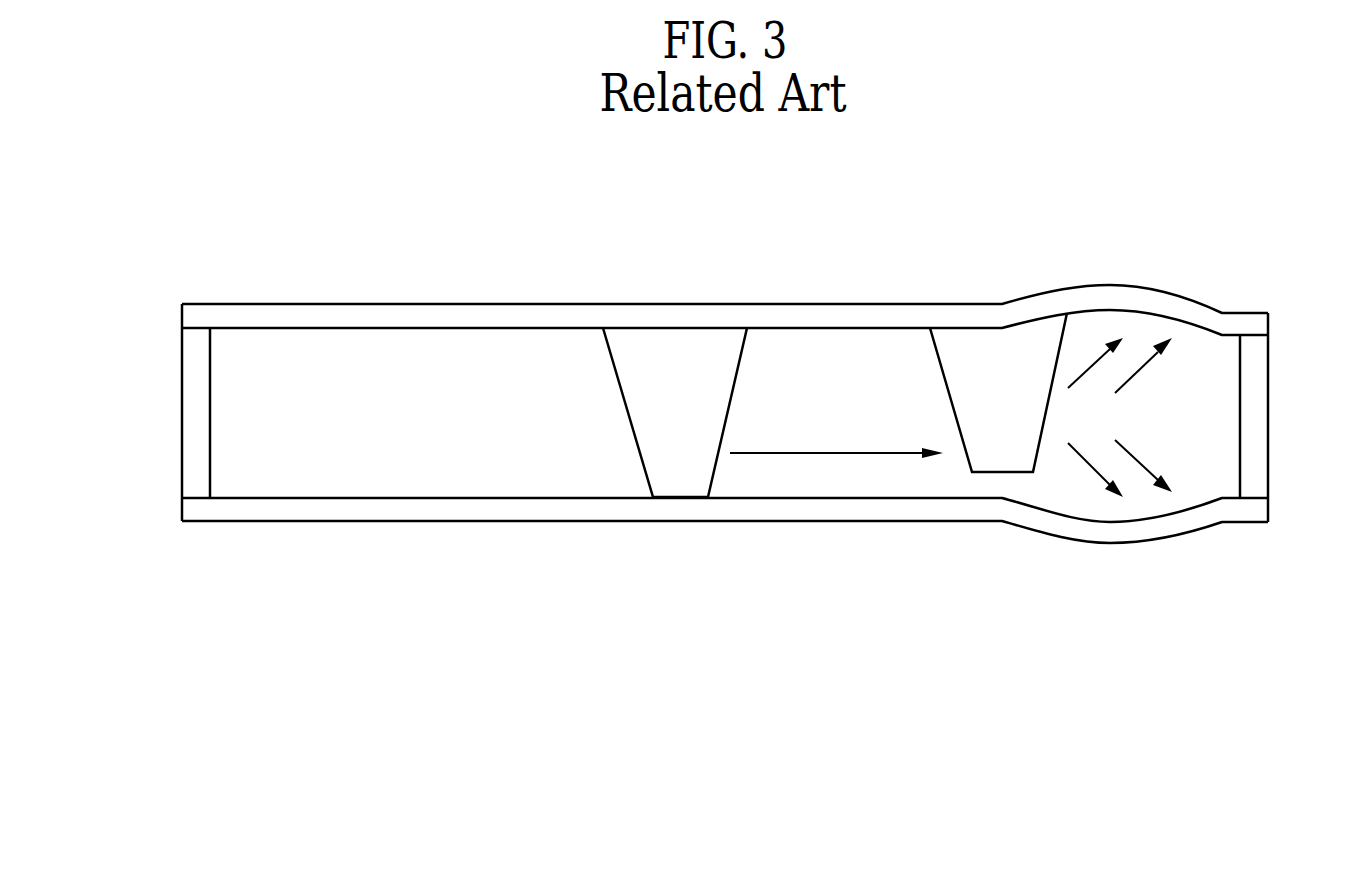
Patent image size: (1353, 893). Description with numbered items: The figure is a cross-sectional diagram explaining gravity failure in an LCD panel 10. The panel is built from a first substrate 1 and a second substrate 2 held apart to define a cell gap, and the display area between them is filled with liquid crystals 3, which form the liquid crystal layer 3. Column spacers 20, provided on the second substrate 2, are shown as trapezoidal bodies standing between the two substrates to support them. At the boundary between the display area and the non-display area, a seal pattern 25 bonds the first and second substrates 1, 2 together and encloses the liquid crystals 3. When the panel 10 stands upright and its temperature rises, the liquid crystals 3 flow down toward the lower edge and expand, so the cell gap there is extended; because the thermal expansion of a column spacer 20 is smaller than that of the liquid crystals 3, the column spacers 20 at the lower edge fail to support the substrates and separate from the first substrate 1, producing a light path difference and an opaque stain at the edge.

The first substrate 1 is at (192, 510).
The second substrate 2 is at (192, 314).
The liquid crystals 3 is at (493, 352).
The LCD panel 10 is at (93, 302).
The column spacer 20 is at (688, 353).
The seal pattern 25 is at (1252, 375).